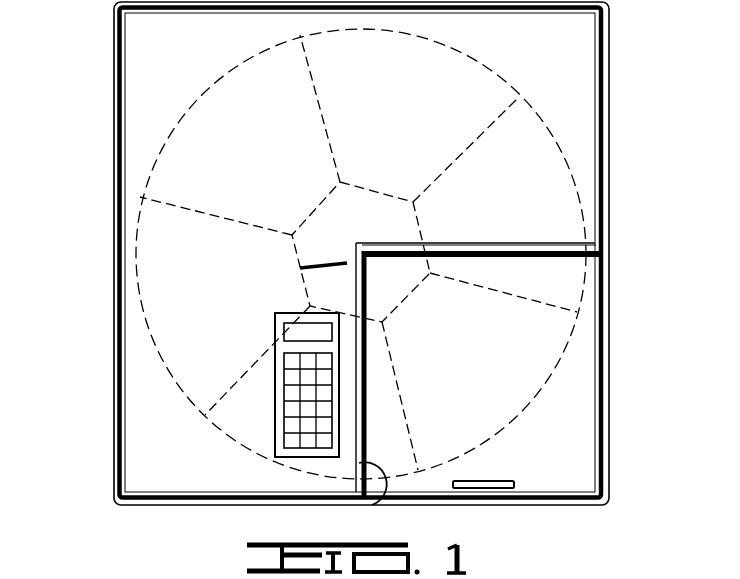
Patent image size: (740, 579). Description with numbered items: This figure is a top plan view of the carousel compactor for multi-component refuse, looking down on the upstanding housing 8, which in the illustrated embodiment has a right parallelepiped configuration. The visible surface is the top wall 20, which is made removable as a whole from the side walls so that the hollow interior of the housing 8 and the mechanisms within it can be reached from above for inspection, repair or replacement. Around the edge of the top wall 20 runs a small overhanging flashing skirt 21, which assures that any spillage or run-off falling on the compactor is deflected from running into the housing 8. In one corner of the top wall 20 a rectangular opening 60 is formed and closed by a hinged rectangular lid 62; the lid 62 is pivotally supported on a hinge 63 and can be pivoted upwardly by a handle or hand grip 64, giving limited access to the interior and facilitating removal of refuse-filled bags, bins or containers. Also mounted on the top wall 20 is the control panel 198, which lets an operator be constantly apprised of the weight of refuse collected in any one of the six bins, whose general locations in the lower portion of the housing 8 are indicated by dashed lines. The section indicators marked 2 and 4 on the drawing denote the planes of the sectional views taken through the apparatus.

The housing 8 is at (612, 100).
The top wall 20 is at (184, 62).
The flashing skirt 21 is at (611, 416).
The hinged rectangular lid 62 is at (581, 447).
The hinge 63 is at (540, 243).
The handle 64 is at (498, 488).
The rectangular opening 60 is at (372, 505).
The control panel 198 is at (273, 428).
The section line 4- 4 is at (318, 213).
The section line 2- 2 is at (72, 332).